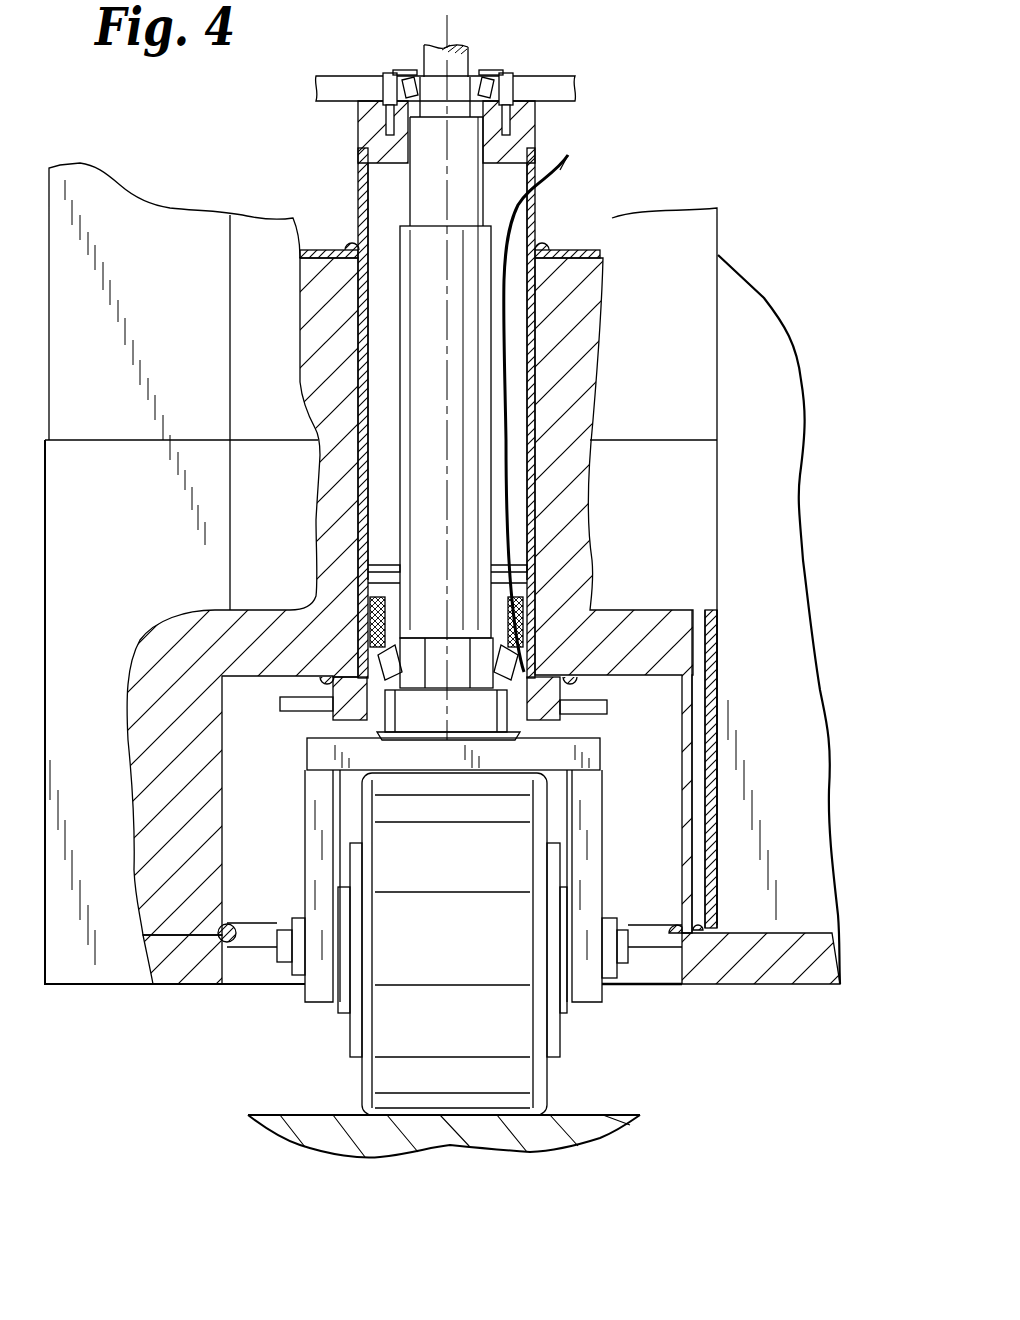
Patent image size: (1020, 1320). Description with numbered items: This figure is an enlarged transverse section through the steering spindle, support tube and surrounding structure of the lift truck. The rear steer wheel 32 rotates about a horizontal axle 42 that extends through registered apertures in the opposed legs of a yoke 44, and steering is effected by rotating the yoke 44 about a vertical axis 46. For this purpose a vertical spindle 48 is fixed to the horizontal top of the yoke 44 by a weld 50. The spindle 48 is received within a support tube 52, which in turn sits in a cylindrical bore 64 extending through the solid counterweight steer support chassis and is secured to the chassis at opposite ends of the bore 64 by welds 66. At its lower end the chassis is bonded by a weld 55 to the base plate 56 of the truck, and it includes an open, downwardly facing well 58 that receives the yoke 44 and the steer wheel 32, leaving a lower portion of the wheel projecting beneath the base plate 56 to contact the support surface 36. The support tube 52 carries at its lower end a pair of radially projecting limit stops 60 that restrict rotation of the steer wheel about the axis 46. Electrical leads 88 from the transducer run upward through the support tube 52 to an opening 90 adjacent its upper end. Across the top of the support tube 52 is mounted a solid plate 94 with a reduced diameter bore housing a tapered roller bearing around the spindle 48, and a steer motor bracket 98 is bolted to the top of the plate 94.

The steer wheel 32 is at (387, 1072).
The support surface 36 is at (676, 1115).
The horizontal axle 42 is at (287, 952).
The yoke 44 is at (595, 752).
The vertical axis 46 is at (450, 512).
The vertical spindle 48 is at (468, 452).
The weld 50 is at (325, 722).
The support tube 52 is at (537, 315).
The weld 55 is at (245, 935).
The base plate 56 is at (748, 970).
The well 58 is at (652, 965).
The limit stops 60 is at (293, 704).
The cylindrical bore 64 is at (540, 420).
The welds 66 is at (542, 242).
The electrical leads 88 is at (568, 162).
The opening 90 is at (536, 198).
The solid plate 94 is at (528, 122).
The steer motor bracket 98 is at (538, 84).